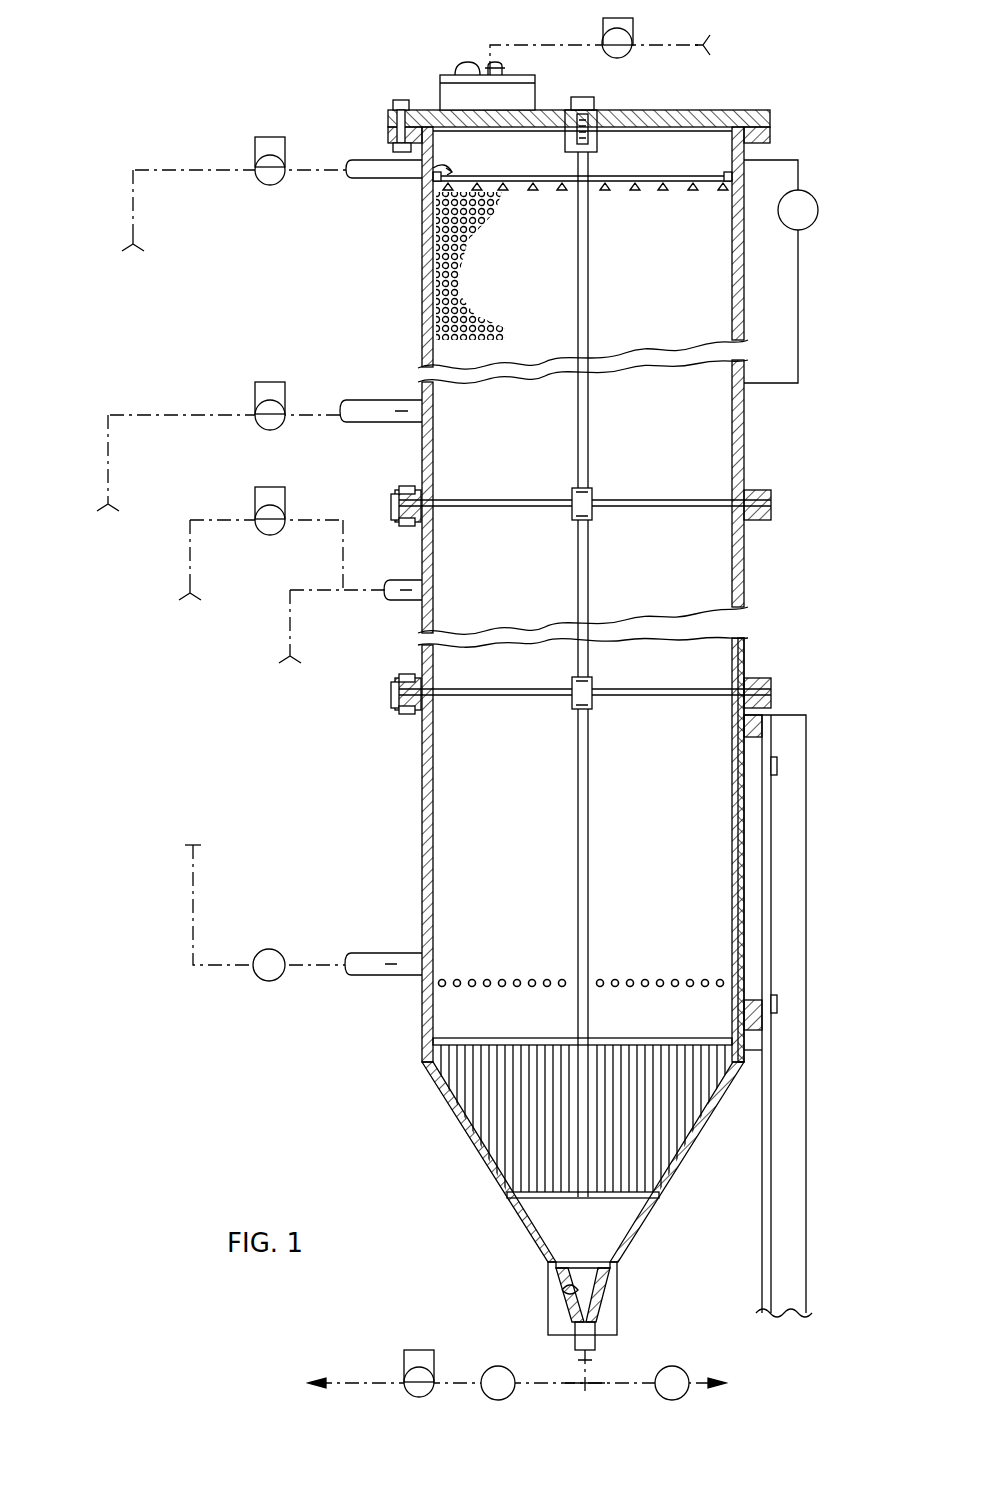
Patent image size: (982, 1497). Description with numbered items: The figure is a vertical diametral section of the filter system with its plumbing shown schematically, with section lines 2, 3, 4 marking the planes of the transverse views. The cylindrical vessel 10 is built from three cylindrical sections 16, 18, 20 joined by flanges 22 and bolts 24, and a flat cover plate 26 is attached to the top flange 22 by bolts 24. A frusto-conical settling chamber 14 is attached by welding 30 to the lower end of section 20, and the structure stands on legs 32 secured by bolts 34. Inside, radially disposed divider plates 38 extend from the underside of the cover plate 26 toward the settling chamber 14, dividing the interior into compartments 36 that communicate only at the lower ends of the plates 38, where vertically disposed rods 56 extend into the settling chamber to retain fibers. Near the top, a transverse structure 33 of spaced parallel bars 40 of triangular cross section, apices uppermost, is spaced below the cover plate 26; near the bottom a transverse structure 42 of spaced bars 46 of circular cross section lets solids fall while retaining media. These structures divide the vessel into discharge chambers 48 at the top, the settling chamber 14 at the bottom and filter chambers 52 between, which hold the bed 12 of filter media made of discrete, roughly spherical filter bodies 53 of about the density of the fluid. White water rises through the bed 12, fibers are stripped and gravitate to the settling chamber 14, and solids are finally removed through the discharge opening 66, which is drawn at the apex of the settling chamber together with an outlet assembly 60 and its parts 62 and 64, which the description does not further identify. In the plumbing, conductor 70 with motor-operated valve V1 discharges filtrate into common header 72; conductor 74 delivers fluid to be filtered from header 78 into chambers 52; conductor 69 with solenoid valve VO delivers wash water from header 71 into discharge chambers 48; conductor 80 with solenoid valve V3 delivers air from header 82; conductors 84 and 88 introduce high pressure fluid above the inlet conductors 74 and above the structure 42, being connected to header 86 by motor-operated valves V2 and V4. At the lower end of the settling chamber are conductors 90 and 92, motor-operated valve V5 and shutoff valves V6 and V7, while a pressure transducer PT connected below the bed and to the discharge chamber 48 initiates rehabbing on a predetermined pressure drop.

The cylindrical vessel 10 is at (765, 451).
The bed of filter media 12 is at (526, 342).
The settling chamber 14 is at (620, 1228).
The cylindrical section 16 is at (745, 282).
The cylindrical section 18 is at (745, 580).
The cylindrical section 20 is at (806, 720).
The flange 22 is at (772, 140).
The bolt 24 is at (402, 100).
The flat cover plate 26 is at (690, 108).
The welding 30 is at (748, 1068).
The leg 32 is at (797, 820).
The transverse structure 33 is at (418, 172).
The bolt 34 is at (778, 770).
The compartment 36 is at (430, 778).
The divider plate 38 is at (455, 826).
The bar 40 is at (641, 193).
The transverse structure 42 is at (520, 976).
The bar 46 is at (645, 977).
The discharge chamber 48 is at (481, 171).
The filter chamber 52 is at (493, 814).
The filter body 53 is at (455, 262).
The rod 56 is at (500, 1150).
The outlet assembly 60 is at (538, 1293).
The outlet cone 62 is at (622, 1282).
The discharge nozzle 64 is at (618, 1318).
The discharge opening 66 is at (556, 1305).
The conductor 69 is at (552, 47).
The conductor 70 is at (313, 178).
The common header 71 is at (660, 48).
The common header 72 is at (133, 210).
The conductor 74 is at (388, 600).
The common header 78 is at (290, 645).
The conductor 80 is at (342, 520).
The common header 82 is at (190, 550).
The conductor 84 is at (362, 398).
The header 86 is at (108, 478).
The conductor 88 is at (368, 978).
The conductor 90 is at (440, 1383).
The conductor 92 is at (650, 1383).
The section line 2 is at (350, 100).
The section line 3 is at (413, 958).
The section line 4 is at (400, 1044).
The motor-operated valve V1 is at (272, 138).
The motor-operated valve V2 is at (280, 382).
The solenoid-operated valve V3 is at (281, 490).
The motor-operated valve V4 is at (281, 958).
The motor-operated valve V5 is at (431, 1358).
The shutoff valve V6 is at (507, 1378).
The shutoff valve V7 is at (681, 1378).
The solenoid-operated valve VO is at (635, 30).
The pressure transducer PT is at (822, 205).